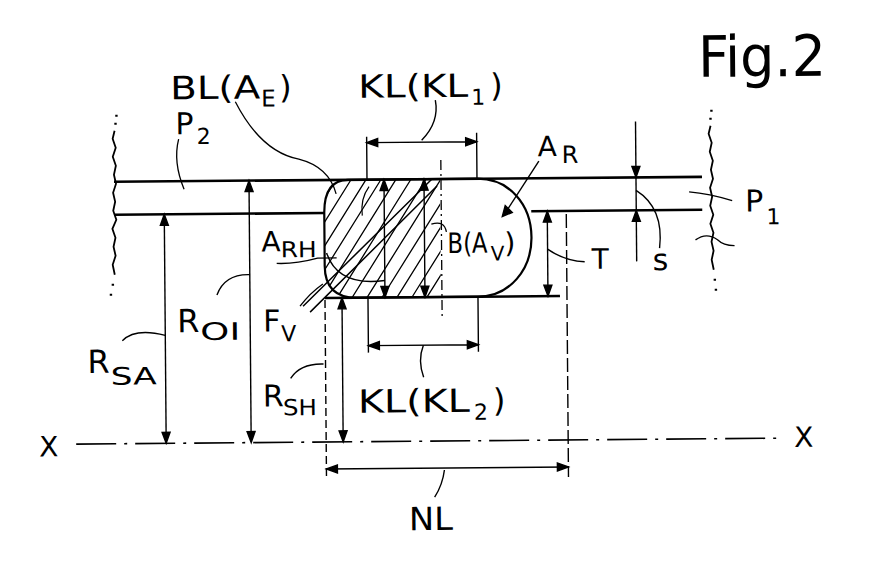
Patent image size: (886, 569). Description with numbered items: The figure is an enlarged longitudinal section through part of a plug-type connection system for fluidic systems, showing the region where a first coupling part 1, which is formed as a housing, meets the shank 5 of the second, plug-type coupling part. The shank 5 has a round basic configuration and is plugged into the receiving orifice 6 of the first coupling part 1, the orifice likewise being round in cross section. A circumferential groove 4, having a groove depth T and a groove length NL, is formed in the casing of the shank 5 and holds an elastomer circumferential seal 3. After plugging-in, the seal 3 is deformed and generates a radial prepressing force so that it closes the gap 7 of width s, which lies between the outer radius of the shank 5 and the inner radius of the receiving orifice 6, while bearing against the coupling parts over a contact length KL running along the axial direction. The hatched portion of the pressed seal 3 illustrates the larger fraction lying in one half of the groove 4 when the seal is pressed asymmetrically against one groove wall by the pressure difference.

The first coupling part 1 is at (697, 148).
The circumferential seal 3 is at (492, 200).
The groove 4 is at (521, 299).
The shank 5 is at (700, 250).
The receiving orifice 6 is at (127, 198).
The gap 7 is at (606, 183).